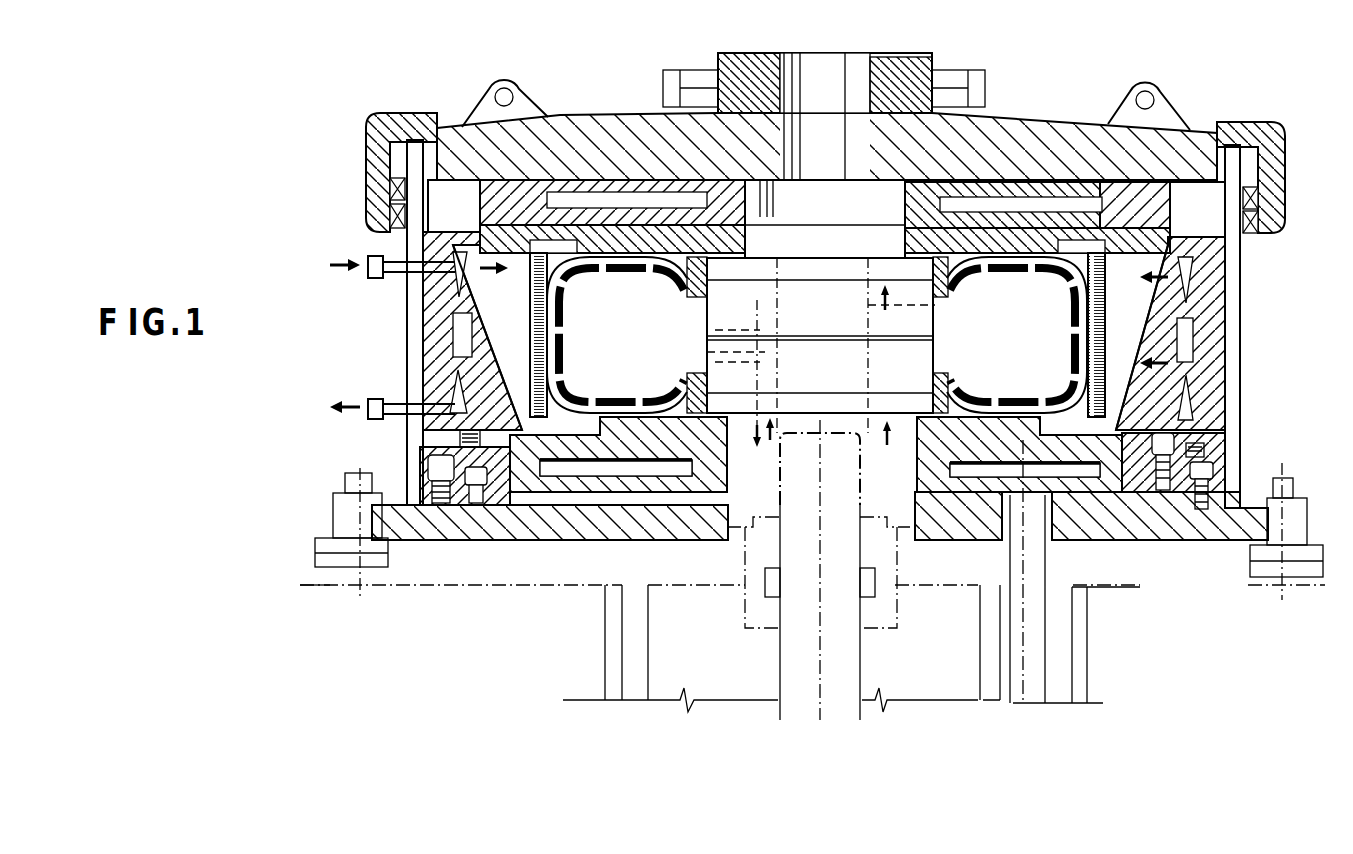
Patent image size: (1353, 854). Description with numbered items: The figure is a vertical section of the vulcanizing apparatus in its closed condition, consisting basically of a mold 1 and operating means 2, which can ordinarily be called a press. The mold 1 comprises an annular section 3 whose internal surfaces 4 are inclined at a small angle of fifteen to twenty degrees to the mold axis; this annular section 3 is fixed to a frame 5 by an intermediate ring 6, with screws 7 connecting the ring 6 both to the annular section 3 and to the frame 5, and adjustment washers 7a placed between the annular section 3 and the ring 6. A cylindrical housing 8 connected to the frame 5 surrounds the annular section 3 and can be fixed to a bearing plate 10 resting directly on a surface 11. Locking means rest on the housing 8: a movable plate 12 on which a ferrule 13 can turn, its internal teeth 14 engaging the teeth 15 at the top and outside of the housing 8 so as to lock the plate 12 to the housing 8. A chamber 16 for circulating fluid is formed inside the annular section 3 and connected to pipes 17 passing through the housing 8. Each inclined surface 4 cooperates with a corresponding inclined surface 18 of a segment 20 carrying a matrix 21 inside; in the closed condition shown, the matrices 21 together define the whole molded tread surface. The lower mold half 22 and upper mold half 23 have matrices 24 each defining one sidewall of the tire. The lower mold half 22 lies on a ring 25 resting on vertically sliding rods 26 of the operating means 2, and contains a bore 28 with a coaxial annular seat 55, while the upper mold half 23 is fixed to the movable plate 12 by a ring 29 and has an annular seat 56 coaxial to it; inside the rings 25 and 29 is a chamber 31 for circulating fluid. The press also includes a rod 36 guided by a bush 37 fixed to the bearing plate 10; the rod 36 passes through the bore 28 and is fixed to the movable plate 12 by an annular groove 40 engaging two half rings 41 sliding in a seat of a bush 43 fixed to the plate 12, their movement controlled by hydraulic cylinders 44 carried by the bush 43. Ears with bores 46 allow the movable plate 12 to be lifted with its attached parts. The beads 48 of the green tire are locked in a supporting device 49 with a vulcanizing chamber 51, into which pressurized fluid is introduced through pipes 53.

The mold 1 is at (366, 103).
The operating means 2 is at (915, 662).
The annular section 3 is at (470, 392).
The internal surfaces 4 is at (513, 281).
The frame 5 is at (548, 515).
The intermediate ring 6 is at (515, 494).
The screws 7 is at (440, 505).
The adjustment washers 7a is at (470, 440).
The cylindrical housing 8 is at (1240, 297).
The bearing plate 10 is at (455, 560).
The surface 11 is at (303, 588).
The movable plate 12 is at (1018, 140).
The ferrule 13 is at (385, 133).
The internal teeth 14 is at (385, 212).
The teeth 15 is at (395, 185).
The chamber 16 is at (470, 350).
The pipes 17 is at (385, 250).
The inclined surface 18 is at (462, 366).
The segment 20 is at (513, 298).
The matrix 21 is at (533, 385).
The lower mold half 22 is at (890, 445).
The upper mold half 23 is at (1018, 240).
The matrices 24 is at (610, 270).
The ring 25 is at (590, 445).
The vertically sliding rods 26 is at (1037, 680).
The bore 28 is at (745, 433).
The ring 29 is at (1140, 200).
The chamber 31 is at (1068, 205).
The rod 36 is at (835, 683).
The bush 37 is at (772, 548).
The annular groove 40 is at (858, 480).
The half rings 41 is at (755, 85).
The bush 43 is at (920, 75).
The hydraulic cylinders 44 is at (692, 80).
The ears with bores 46 is at (490, 110).
The beads 48 is at (958, 285).
The supporting device 49 is at (772, 443).
The vulcanizing chamber 51 is at (1075, 370).
The pipes 53 is at (880, 392).
The annular seat 55 is at (757, 355).
The annular seat 56 is at (735, 262).